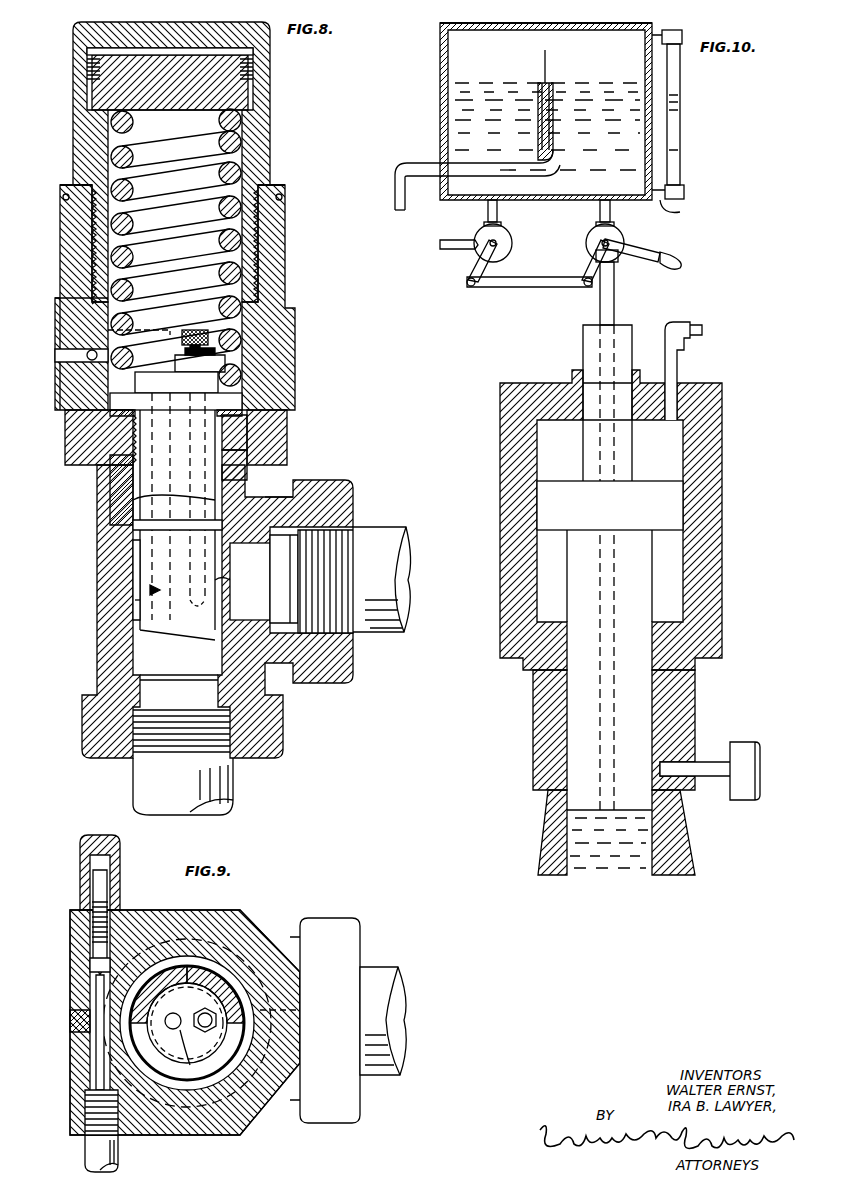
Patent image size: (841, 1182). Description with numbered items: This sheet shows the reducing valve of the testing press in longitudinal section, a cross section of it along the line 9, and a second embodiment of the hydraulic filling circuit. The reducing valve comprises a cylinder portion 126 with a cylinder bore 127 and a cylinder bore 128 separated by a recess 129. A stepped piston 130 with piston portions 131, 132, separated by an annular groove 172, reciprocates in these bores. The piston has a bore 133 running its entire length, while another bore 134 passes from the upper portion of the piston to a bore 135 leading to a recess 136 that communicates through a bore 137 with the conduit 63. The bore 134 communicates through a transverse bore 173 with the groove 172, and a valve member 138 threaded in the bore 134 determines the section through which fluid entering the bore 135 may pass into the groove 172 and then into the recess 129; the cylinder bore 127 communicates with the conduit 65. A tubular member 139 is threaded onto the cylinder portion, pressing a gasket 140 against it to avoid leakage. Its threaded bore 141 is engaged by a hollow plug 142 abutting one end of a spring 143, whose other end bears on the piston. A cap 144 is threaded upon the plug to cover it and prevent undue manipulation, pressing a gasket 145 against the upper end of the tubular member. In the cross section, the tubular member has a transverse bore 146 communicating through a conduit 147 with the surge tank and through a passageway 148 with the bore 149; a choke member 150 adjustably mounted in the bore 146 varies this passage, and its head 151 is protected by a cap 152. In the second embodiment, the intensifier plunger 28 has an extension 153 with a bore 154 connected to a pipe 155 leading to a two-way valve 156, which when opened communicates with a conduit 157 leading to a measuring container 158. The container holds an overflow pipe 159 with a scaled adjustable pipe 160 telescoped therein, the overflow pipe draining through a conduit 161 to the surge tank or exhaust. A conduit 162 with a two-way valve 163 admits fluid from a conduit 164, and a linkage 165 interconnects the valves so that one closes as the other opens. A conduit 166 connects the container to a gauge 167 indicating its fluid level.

In FIG. 8, the cap 144 is at (78, 34).
In FIG. 8, the hollow plug 142 is at (90, 100).
In FIG. 8, the spring 143 is at (112, 160).
In FIG. 8, the gasket 145 is at (64, 199).
In FIG. 8, the threaded bore 141 is at (92, 256).
In FIG. 8, the tubular member 139 is at (75, 290).
In FIG. 8, the bore 149 is at (108, 330).
In FIG. 9, the bore 149 is at (175, 1013).
In FIG. 8, the section line 9 is at (60, 355).
In FIG. 8, the passageway 148 is at (120, 366).
In FIG. 9, the passageway 148 is at (198, 1026).
In FIG. 8, the gasket 140 is at (108, 408).
In FIG. 8, the valve member 138 is at (245, 355).
In FIG. 8, the cylinder bore 128 is at (105, 438).
In FIG. 8, the piston portion 132 is at (250, 435).
In FIG. 8, the bore 134 is at (250, 452).
In FIG. 9, the bore 134 is at (265, 1010).
In FIG. 8, the cylinder portion 126 is at (108, 662).
In FIG. 8, the piston portion 131 is at (277, 483).
In FIG. 8, the bore 137 is at (256, 568).
In FIG. 8, the bore 135 is at (216, 583).
In FIG. 8, the conduit 63 is at (380, 535).
In FIG. 9, the conduit 63 is at (385, 975).
In FIG. 8, the cylinder bore 127 is at (160, 634).
In FIG. 8, the transverse bore 173 is at (128, 478).
In FIG. 9, the transverse bore 173 is at (265, 1031).
In FIG. 8, the recess 129 is at (138, 503).
In FIG. 8, the annular groove 172 is at (134, 527).
In FIG. 8, the stepped piston 130 is at (134, 560).
In FIG. 8, the recess 136 is at (150, 590).
In FIG. 8, the bore 133 is at (135, 600).
In FIG. 9, the bore 133 is at (198, 1053).
In FIG. 8, the conduit 65 is at (140, 785).
In FIG. 10, the measuring container 158 is at (440, 45).
In FIG. 10, the overflow pipe 159 is at (556, 105).
In FIG. 10, the adjustable pipe 160 is at (553, 57).
In FIG. 10, the conduit 161 is at (395, 192).
In FIG. 10, the gauge 167 is at (681, 95).
In FIG. 10, the conduit 166 is at (688, 212).
In FIG. 10, the conduit 162 is at (497, 213).
In FIG. 10, the conduit 157 is at (600, 213).
In FIG. 10, the two-way valve 163 is at (502, 234).
In FIG. 10, the conduit 164 is at (452, 240).
In FIG. 10, the two-way valve 156 is at (622, 235).
In FIG. 10, the linkage 165 is at (542, 287).
In FIG. 10, the pipe 155 is at (614, 302).
In FIG. 10, the extension 153 is at (632, 330).
In FIG. 10, the intensifier plunger 28 is at (641, 548).
In FIG. 10, the bore 154 is at (600, 510).
In FIG. 9, the cap 152 is at (82, 845).
In FIG. 9, the head 151 is at (90, 877).
In FIG. 9, the choke member 150 is at (92, 960).
In FIG. 9, the transverse bore 146 is at (98, 1055).
In FIG. 9, the conduit 147 is at (86, 1161).